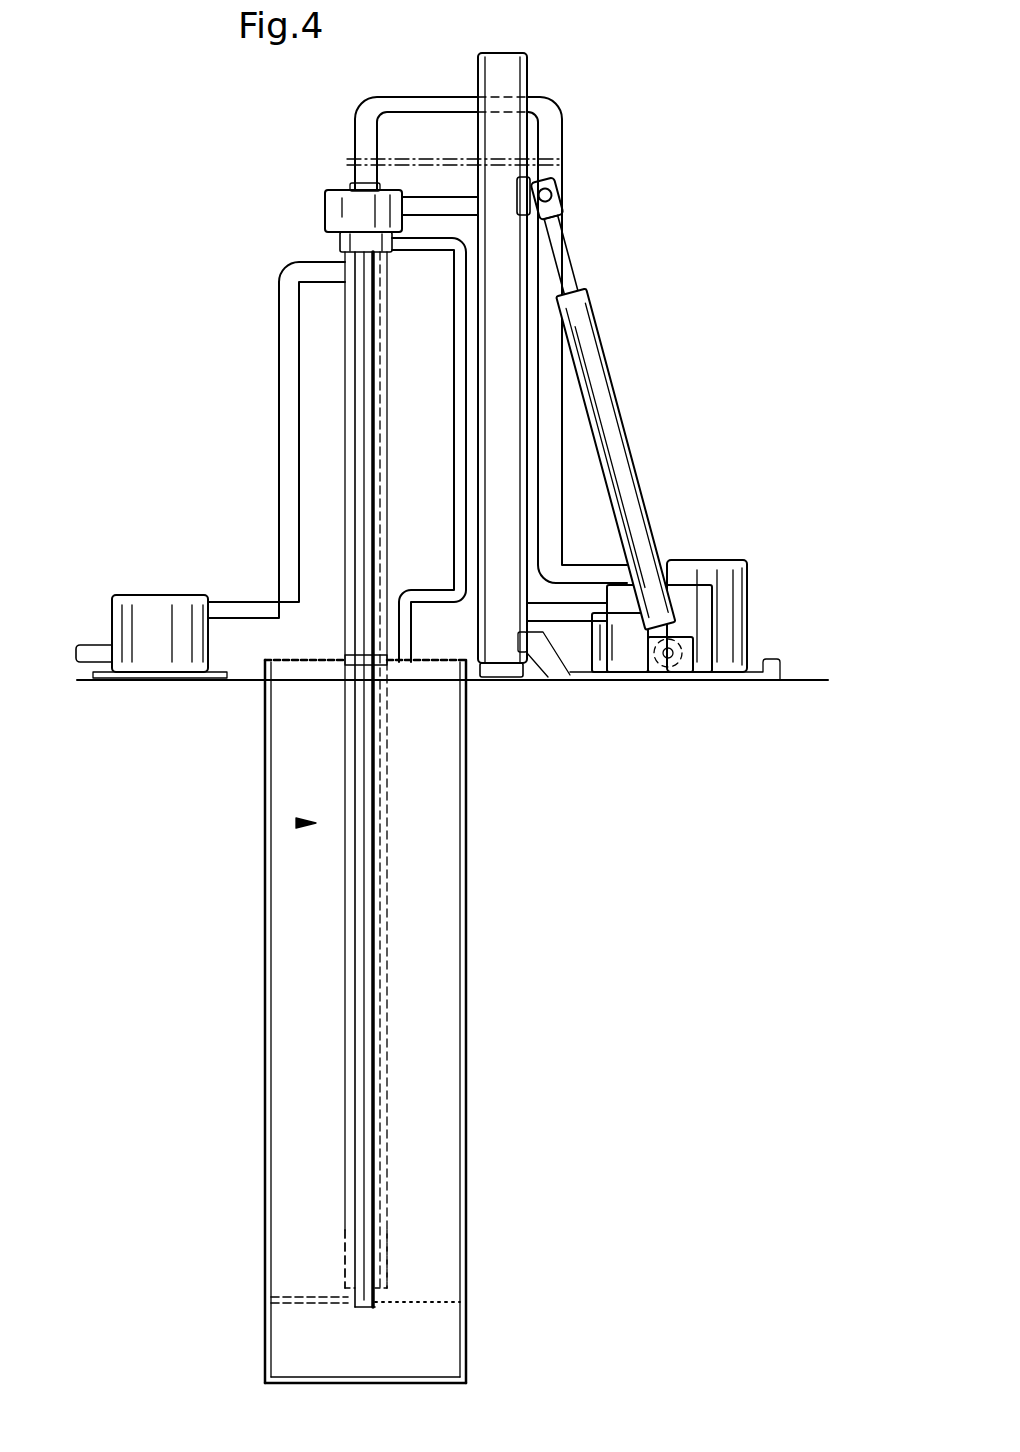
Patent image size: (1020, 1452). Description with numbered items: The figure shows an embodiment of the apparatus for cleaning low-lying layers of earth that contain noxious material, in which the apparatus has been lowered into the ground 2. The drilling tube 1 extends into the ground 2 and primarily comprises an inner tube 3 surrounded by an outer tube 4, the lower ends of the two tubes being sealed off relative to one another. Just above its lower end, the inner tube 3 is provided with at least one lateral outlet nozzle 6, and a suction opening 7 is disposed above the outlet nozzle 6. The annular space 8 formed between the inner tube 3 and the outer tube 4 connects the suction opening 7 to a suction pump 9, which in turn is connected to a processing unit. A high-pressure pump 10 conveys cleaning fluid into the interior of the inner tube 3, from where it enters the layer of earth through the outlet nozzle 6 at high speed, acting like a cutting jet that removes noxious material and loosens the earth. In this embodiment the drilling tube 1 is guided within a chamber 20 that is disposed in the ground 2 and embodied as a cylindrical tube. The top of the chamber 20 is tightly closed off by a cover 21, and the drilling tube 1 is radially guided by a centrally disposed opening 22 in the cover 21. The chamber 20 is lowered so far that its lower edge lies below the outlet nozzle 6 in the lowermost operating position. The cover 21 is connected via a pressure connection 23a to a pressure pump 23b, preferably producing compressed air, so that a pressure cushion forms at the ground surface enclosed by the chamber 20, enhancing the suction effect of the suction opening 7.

The drilling tube 1 is at (298, 823).
The ground 2 is at (798, 705).
The inner tube 3 is at (357, 880).
The outer tube 4 is at (345, 938).
The outlet nozzle 6 is at (342, 1302).
The suction opening 7 is at (393, 1263).
The annular space 8 is at (352, 1075).
The suction pump 9 is at (142, 615).
The high-pressure pump 10 is at (728, 598).
The chamber 20 is at (265, 1005).
The cover 21 is at (295, 658).
The opening 22 is at (343, 660).
The pressure connection 23a is at (408, 624).
The pressure pump 23b is at (623, 605).